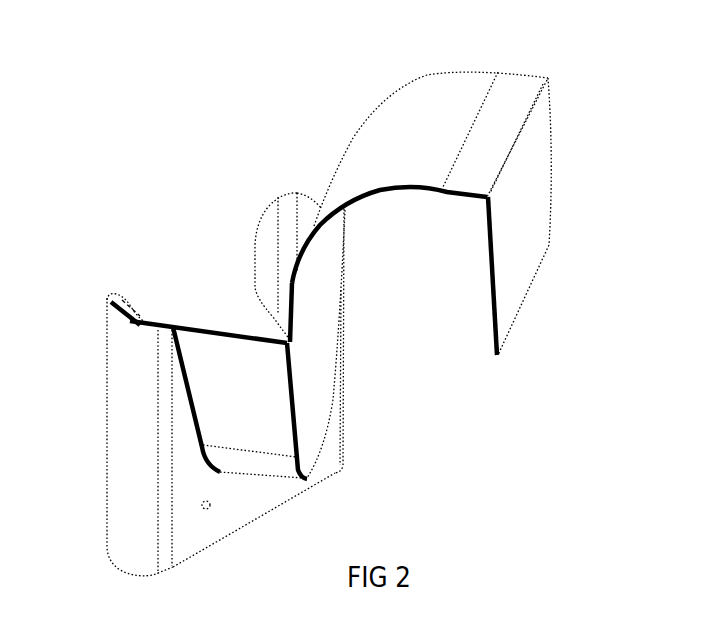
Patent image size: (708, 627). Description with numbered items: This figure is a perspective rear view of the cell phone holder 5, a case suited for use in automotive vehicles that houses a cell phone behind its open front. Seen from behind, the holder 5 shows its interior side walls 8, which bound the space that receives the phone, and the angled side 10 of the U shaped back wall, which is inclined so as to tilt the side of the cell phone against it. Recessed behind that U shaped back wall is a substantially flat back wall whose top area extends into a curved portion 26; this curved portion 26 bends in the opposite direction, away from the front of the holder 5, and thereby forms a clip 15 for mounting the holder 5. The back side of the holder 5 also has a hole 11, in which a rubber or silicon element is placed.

The cell phone holder 5 is at (106, 380).
The interior side walls 8 is at (116, 297).
The angled side of the U shaped back wall 10 is at (238, 401).
The hole 11 is at (213, 505).
The clip 15 is at (523, 207).
The curved portion 26 is at (425, 127).